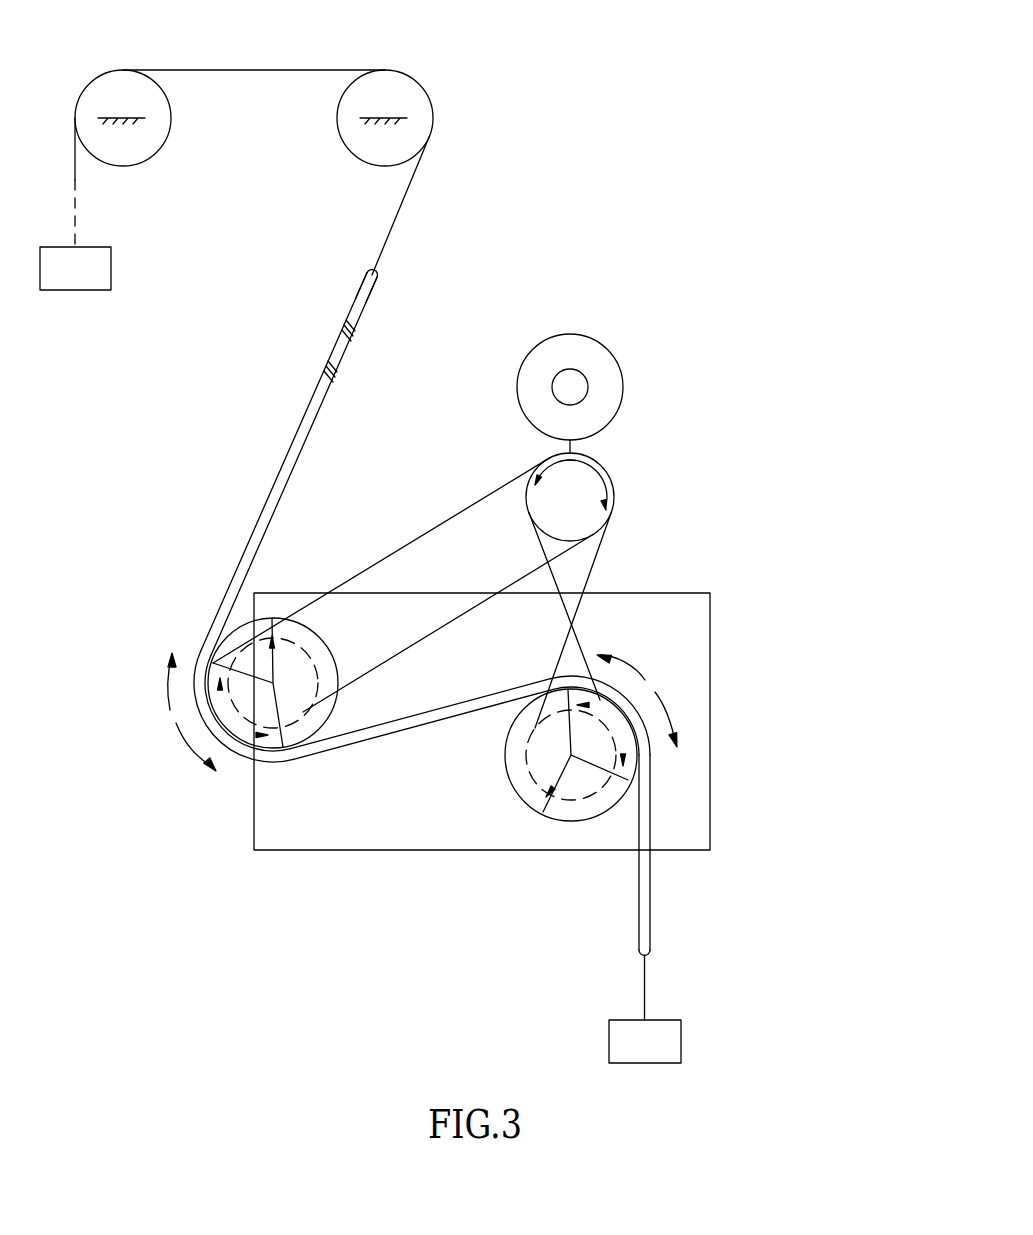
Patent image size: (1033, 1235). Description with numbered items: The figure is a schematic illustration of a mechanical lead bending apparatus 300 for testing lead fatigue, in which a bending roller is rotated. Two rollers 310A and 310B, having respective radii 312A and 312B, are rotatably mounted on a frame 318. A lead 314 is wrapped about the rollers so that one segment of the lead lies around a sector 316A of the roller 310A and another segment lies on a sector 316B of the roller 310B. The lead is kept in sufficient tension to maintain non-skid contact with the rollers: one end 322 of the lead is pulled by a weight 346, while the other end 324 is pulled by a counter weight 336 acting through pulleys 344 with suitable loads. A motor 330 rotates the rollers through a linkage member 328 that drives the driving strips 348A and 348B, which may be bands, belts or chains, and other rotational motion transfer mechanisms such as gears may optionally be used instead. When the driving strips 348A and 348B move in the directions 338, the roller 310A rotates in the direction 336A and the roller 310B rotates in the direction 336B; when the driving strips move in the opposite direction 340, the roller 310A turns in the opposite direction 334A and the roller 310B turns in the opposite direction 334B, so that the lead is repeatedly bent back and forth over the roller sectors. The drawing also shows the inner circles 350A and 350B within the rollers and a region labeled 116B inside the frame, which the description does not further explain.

The belt tensioning system 300 is at (590, 48).
The pulleys 344 is at (340, 127).
The counter weight 336 is at (111, 267).
The other end 324 is at (362, 290).
The lead 314 is at (263, 470).
The sector 316A is at (235, 755).
The sector 316B is at (637, 737).
The one end 322 is at (650, 932).
The weight 346 is at (681, 1035).
The frame 318 is at (297, 818).
The motor 330 is at (623, 387).
The linkage member 328 is at (614, 500).
The directions 338 is at (540, 468).
The opposite direction 340 is at (607, 468).
The driving strip 348A is at (395, 552).
The driving strip 348B is at (615, 558).
The region B 116B is at (510, 618).
The roller 310A is at (357, 717).
The roller A inner race 350A is at (317, 638).
The radius 312A is at (272, 615).
The opposite direction 334A is at (165, 695).
The direction 336A is at (185, 745).
The roller 310B is at (500, 835).
The roller B inner race 350B is at (508, 755).
The radius 312B is at (543, 815).
The opposite direction 334B is at (640, 660).
The direction 336B is at (667, 702).